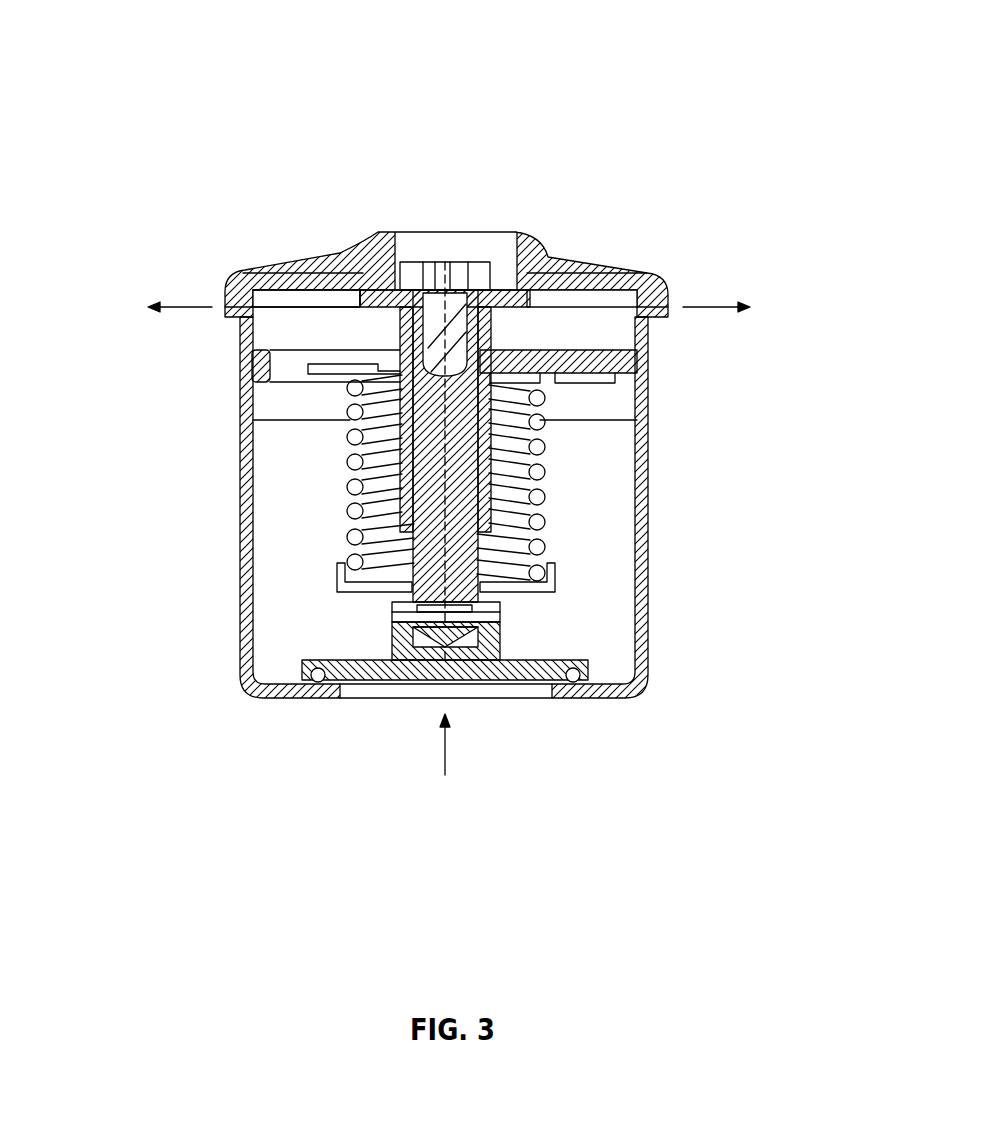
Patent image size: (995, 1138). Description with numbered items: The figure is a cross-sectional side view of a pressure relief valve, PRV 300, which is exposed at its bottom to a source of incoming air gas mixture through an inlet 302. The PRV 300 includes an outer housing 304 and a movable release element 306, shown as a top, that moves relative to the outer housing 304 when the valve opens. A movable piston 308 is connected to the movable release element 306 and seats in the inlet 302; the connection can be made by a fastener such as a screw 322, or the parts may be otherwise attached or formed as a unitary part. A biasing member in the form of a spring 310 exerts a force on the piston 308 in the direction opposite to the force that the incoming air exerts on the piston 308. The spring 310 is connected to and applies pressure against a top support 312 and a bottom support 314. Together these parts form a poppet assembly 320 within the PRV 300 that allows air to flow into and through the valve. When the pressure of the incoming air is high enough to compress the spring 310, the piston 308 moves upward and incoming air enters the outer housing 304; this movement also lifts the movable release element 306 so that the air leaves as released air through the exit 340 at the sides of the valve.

The PRV 300 is at (152, 66).
The inlet 302 is at (417, 700).
The outer housing 304 is at (650, 597).
The movable release element 306 is at (597, 258).
The movable piston 308 is at (470, 523).
The spring 310 is at (348, 540).
The top support 312 is at (600, 373).
The bottom support 314 is at (360, 592).
The poppet assembly 320 is at (214, 662).
The screw 322 is at (443, 292).
The exit 340 is at (262, 318).